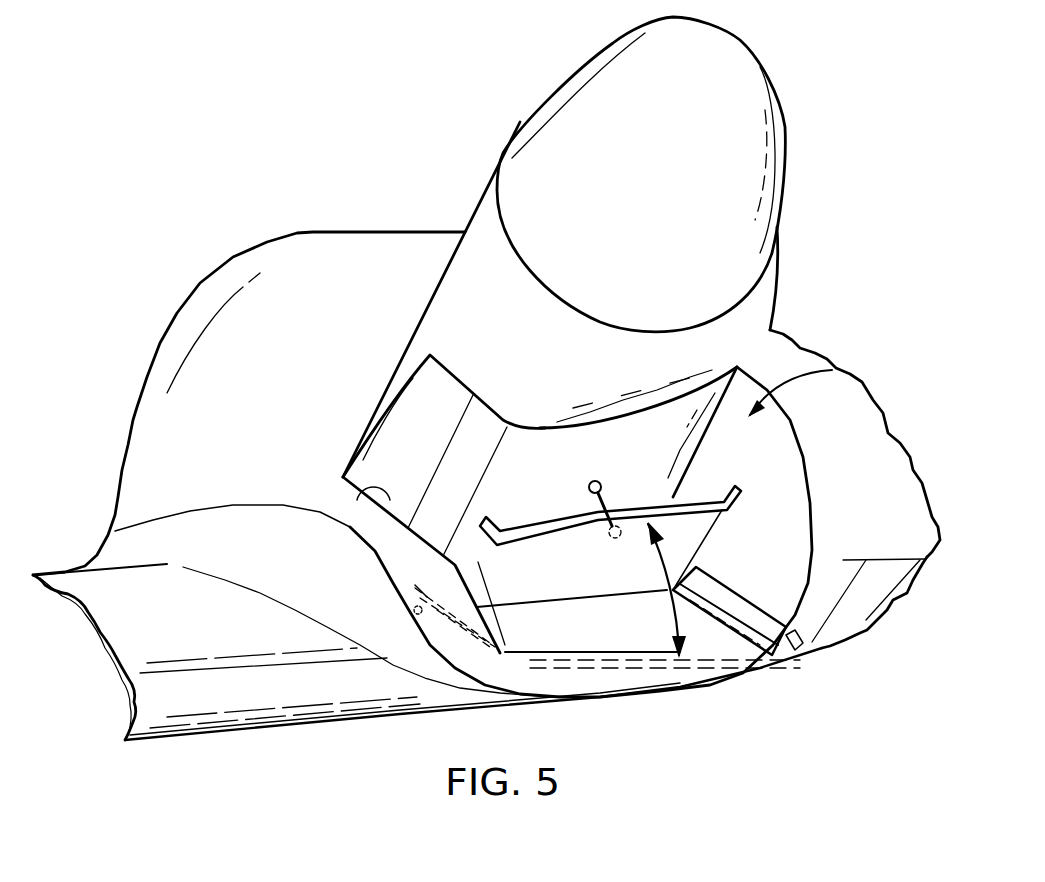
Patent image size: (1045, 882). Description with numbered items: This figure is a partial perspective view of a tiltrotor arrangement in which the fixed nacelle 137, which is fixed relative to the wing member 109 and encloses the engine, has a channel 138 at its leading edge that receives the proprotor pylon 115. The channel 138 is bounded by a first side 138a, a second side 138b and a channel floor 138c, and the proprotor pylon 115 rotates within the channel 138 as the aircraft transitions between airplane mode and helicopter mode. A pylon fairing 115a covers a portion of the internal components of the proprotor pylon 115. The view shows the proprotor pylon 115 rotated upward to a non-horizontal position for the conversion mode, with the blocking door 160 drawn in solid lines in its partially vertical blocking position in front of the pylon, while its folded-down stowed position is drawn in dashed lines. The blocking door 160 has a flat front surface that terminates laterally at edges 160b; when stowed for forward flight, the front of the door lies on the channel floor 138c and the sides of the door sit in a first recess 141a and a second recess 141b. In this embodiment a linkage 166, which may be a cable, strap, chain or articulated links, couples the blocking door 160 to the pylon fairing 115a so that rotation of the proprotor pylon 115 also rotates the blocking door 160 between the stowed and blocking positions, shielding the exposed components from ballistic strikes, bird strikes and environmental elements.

The wing member 109 is at (273, 713).
The proprotor pylon 115 is at (480, 207).
The pylon fairing 115a is at (527, 440).
The fixed nacelle 137 is at (787, 348).
The channel 138 is at (837, 370).
The first side 138a is at (790, 487).
The second side 138b is at (353, 487).
The channel floor 138c is at (717, 647).
The first recess 141a is at (800, 650).
The second recess 141b is at (503, 633).
The blocking door 160 is at (553, 523).
The edges 160b is at (713, 527).
The linkage 166 is at (603, 490).